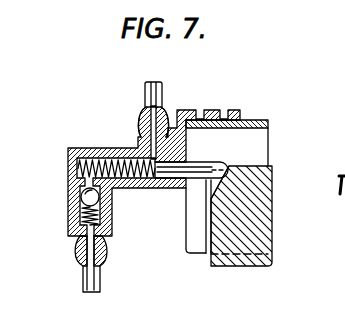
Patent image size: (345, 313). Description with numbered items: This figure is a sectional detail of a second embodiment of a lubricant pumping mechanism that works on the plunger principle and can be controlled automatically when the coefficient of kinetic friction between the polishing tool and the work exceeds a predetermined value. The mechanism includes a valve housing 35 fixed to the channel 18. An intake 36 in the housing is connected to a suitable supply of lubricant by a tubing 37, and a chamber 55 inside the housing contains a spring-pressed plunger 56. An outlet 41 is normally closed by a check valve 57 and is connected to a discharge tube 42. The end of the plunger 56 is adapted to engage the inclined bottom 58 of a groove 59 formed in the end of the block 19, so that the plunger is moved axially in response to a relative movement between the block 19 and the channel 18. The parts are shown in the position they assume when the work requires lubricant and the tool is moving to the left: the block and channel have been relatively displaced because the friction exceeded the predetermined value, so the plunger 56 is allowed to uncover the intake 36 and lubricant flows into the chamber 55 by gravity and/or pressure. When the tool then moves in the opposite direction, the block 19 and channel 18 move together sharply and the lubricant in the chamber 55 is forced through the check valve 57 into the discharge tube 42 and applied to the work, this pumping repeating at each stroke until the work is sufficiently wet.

The valve housing 35 is at (69, 151).
The tubing 37 is at (144, 88).
The intake 36 is at (160, 131).
The channel 18 is at (268, 120).
The chamber 55 is at (77, 168).
The spring-pressed plunger 56 is at (196, 163).
The check valve 57 is at (81, 199).
The inclined bottom 58 is at (212, 190).
The groove 59 is at (212, 184).
The block 19 is at (264, 239).
The outlet 41 is at (78, 246).
The discharge tube 42 is at (83, 288).